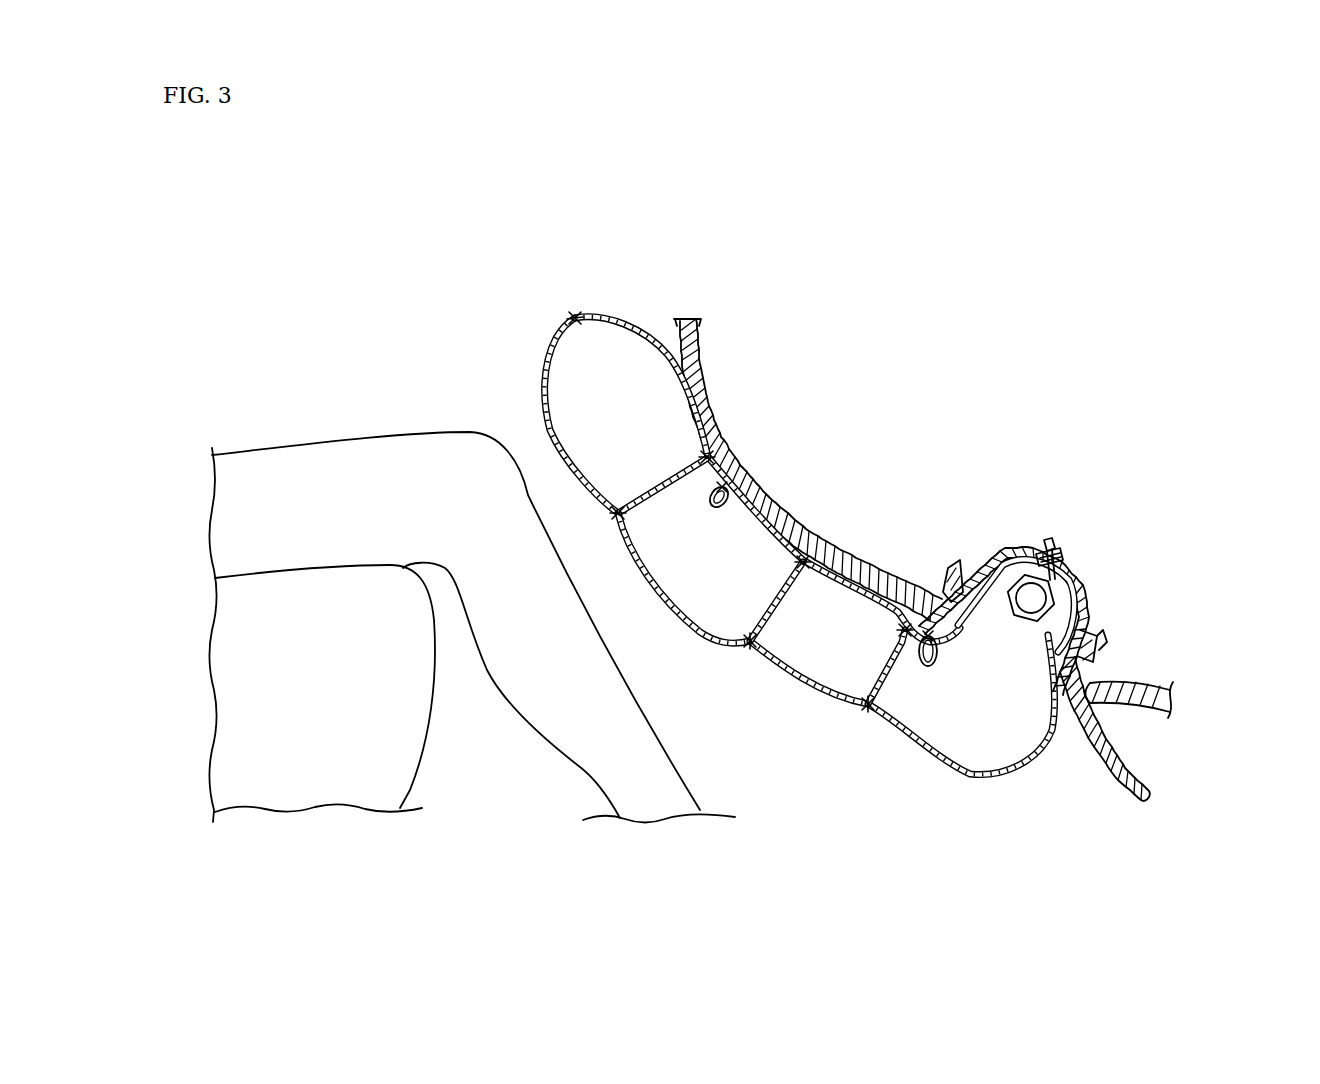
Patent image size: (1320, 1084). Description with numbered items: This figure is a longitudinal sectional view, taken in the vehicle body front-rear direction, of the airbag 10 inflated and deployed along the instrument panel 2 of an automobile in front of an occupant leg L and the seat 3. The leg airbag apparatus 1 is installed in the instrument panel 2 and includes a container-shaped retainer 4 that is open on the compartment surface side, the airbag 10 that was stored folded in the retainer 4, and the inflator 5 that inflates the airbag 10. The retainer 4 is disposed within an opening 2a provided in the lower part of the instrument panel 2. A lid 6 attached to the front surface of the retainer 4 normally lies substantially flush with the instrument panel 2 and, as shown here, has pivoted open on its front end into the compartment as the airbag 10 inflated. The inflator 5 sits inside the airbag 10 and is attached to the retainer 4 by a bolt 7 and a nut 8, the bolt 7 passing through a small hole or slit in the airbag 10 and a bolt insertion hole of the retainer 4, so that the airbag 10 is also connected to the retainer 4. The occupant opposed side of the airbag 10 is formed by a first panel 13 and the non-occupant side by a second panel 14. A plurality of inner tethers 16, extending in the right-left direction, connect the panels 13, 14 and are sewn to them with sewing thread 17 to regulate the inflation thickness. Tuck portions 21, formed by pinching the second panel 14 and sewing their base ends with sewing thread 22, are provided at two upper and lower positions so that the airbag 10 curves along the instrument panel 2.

The leg airbag apparatus 1 is at (909, 823).
The instrument panel 2 is at (723, 427).
The opening 2a is at (1097, 682).
The seat 3 is at (300, 763).
The retainer 4 is at (1000, 553).
The inflator 5 is at (1032, 598).
The lid 6 is at (1130, 773).
The bolt 7 is at (1060, 546).
The nut 8 is at (1041, 548).
The airbag 10 is at (550, 307).
The first panel 13 is at (802, 697).
The second panel 14 is at (647, 330).
The inner tethers 16 is at (665, 488).
The sewing thread 17 is at (618, 522).
The tuck portions 21 is at (706, 515).
The sewing thread 22 is at (733, 500).
The occupant leg L is at (284, 470).